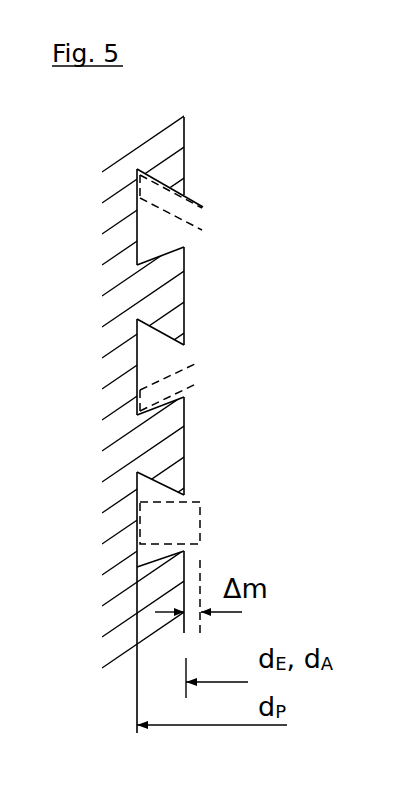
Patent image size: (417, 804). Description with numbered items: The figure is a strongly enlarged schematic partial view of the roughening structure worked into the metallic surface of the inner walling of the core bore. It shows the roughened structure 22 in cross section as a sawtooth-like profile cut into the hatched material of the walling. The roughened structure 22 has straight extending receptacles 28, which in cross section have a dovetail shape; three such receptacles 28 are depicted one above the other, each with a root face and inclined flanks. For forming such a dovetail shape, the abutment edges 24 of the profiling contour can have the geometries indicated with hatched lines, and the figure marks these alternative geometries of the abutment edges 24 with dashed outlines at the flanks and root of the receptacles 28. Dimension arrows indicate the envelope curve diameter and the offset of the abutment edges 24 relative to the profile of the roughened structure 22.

The roughened structure 22 is at (192, 285).
The abutment edges 24 is at (203, 207).
The receptacles 28 is at (137, 216).